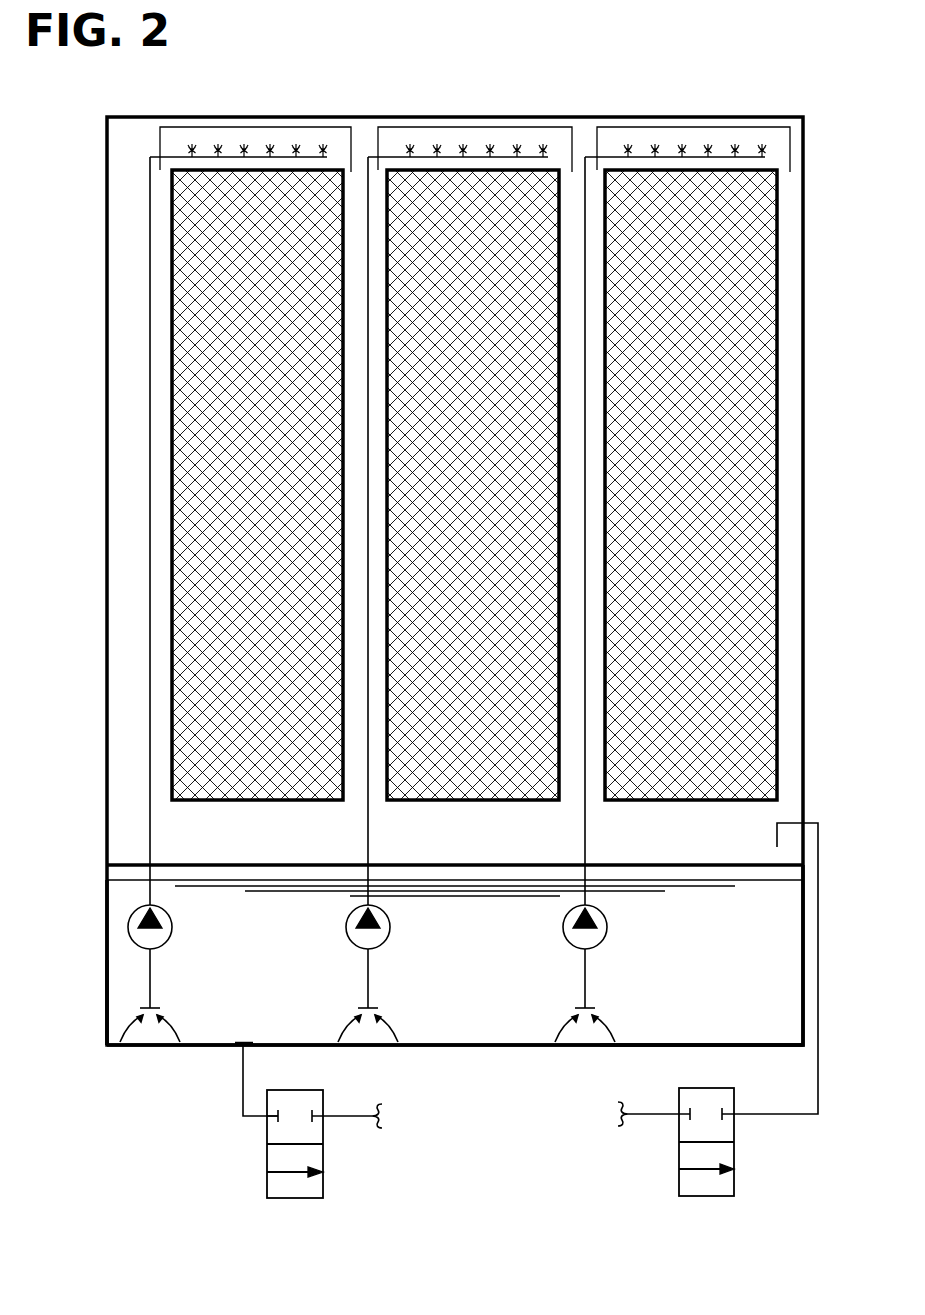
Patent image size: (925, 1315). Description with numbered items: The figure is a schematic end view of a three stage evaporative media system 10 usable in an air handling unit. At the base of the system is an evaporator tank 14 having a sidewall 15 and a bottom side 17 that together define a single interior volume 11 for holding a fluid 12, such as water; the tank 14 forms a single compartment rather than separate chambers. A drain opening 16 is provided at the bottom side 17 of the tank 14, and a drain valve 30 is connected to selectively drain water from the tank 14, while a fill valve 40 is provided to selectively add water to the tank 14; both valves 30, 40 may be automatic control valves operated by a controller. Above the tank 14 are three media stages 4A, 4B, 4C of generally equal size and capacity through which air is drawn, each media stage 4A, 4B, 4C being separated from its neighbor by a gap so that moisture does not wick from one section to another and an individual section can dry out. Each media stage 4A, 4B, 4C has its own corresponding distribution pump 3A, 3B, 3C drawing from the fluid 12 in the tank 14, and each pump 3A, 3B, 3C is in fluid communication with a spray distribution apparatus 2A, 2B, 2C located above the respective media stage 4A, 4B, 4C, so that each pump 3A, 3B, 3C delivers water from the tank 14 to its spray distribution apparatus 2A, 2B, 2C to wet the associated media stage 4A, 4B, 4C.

The evaporative media system 10 is at (98, 199).
The spray distribution apparatus 2A is at (228, 156).
The spray distribution apparatus 2B is at (447, 156).
The spray distribution apparatus 2C is at (666, 156).
The media stage 4A is at (212, 802).
The media stage 4B is at (440, 802).
The media stage 4C is at (660, 802).
The distribution pump 3A is at (175, 924).
The distribution pump 3B is at (391, 924).
The distribution pump 3C is at (608, 924).
The fluid 12 is at (115, 895).
The evaporator tank 14 is at (106, 955).
The sidewall 15 is at (106, 1005).
The drain opening 16 is at (245, 1043).
The bottom side 17 is at (472, 1045).
The interior volume 11 is at (752, 1033).
The drain valve 30 is at (266, 1182).
The fill valve 40 is at (733, 1178).